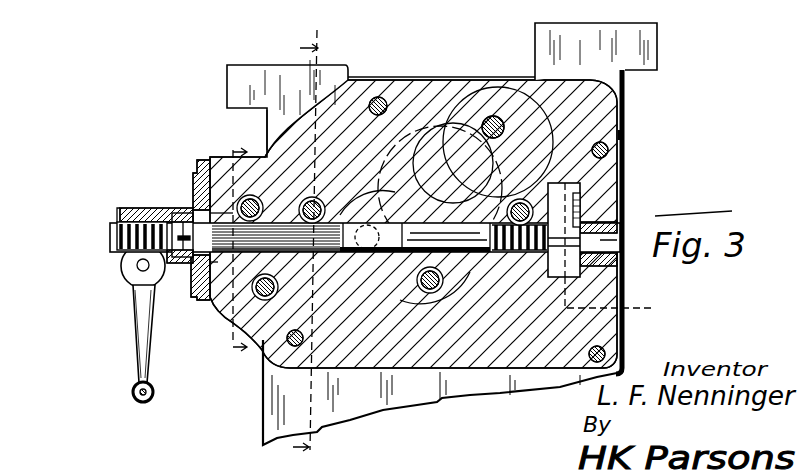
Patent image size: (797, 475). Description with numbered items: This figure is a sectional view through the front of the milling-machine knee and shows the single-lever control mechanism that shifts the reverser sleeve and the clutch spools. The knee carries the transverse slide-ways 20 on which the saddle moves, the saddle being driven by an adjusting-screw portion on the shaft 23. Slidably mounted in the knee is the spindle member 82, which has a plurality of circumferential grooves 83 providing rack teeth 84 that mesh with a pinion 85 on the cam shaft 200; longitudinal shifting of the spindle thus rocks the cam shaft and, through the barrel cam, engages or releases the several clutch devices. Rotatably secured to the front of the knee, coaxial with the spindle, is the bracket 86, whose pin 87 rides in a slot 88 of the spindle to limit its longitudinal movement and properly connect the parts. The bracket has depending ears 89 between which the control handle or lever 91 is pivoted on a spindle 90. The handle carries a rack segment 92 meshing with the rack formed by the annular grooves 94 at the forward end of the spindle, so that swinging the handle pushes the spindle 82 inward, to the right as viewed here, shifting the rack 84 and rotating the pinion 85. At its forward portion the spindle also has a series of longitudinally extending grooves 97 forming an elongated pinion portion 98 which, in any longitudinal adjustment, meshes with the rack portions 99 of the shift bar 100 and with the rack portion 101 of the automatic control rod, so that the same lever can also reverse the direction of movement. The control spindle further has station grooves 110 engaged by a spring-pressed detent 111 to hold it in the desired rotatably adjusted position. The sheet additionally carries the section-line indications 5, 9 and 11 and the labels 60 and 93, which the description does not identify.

The section line 5- 5 is at (309, 247).
The oil passage 9 is at (608, 150).
The section line 11- 11 is at (245, 255).
The transverse slide-ways 20 is at (228, 65).
The shaft 23 is at (494, 116).
The bearing bolt 60 is at (428, 293).
The spindle member 82 is at (460, 230).
The circumferential grooves 83 is at (592, 222).
The rack teeth 84 is at (566, 268).
The pinion 85 is at (613, 125).
The bracket 86 is at (158, 210).
The pin 87 is at (183, 210).
The slot 88 is at (181, 260).
The depending ears 89 is at (127, 278).
The spindle 90 is at (136, 265).
The control handle 91 is at (137, 363).
The rack segment 92 is at (122, 252).
The cap 93 is at (122, 208).
The annular grooves 94 is at (115, 216).
The longitudinal grooves 97 is at (210, 292).
The elongated pinion portion 98 is at (268, 118).
The rack portions 99 is at (390, 222).
The shift bar 100 is at (314, 197).
The rack portion 101 is at (233, 200).
The station grooves 110 is at (612, 248).
The spring pressed detent 111 is at (580, 212).
The cam shaft 200 is at (622, 134).